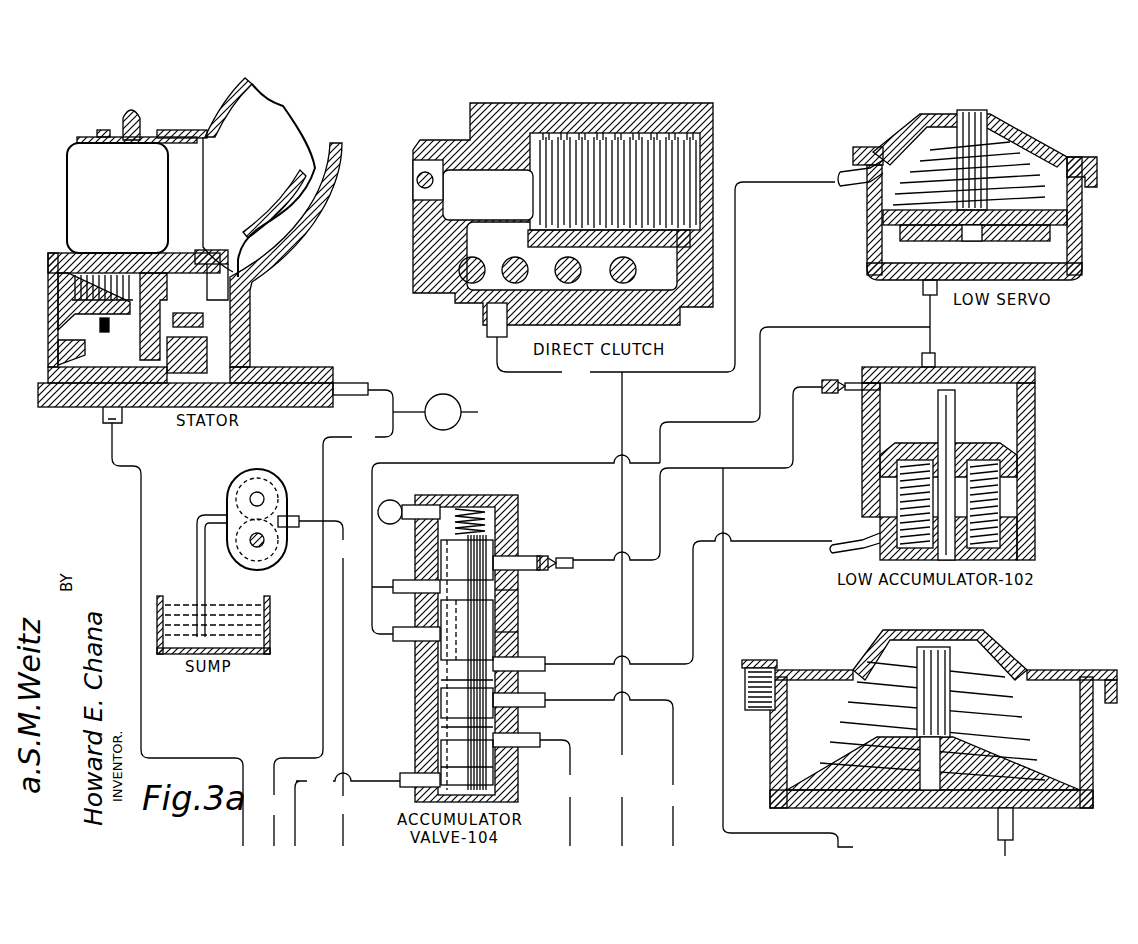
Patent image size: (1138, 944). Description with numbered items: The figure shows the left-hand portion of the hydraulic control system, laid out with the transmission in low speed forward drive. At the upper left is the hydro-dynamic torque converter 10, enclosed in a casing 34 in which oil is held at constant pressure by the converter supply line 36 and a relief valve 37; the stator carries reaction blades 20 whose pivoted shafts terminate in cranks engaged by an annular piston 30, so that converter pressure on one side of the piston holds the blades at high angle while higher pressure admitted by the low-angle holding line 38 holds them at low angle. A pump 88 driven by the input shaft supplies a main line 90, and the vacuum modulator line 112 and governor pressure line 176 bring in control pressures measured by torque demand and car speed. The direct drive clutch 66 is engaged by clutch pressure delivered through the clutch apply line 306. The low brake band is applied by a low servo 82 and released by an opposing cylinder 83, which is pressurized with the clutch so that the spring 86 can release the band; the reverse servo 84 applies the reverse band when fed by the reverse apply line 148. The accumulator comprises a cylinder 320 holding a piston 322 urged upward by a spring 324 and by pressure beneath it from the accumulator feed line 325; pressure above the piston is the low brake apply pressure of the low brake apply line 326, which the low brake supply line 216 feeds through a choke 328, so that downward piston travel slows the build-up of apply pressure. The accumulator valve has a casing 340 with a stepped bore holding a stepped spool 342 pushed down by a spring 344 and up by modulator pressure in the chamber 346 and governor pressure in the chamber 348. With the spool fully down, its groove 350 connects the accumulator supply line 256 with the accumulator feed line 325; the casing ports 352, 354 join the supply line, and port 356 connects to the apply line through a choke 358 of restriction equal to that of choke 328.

The hydro-dynamic torque converter 10 is at (292, 107).
The reaction blades 20 is at (70, 200).
The annular piston 30 is at (178, 266).
The casing 34 is at (314, 224).
The converter supply line 36 is at (394, 402).
The pressure regulator valve 37 is at (448, 412).
The low-angle holding line 38 is at (141, 511).
The direct drive clutch 66 is at (648, 165).
The low servo 82 is at (1052, 255).
The opposing cylinder 83 is at (1052, 183).
The reverse servo 84 is at (1035, 692).
The spring 86 is at (1015, 132).
The pump 88 is at (262, 470).
The main line 90 is at (344, 520).
The vacuum modulator line 112 is at (295, 818).
The reverse apply line 148 is at (1013, 822).
The governor pressure line 176 is at (570, 846).
The low brake supply line 216 is at (410, 588).
The accumulator supply line 256 is at (673, 840).
The clutch apply line 306 is at (622, 402).
The cylinder 320 is at (1000, 411).
The piston 322 is at (1005, 454).
The spring 324 is at (1000, 492).
The accumulator feed line 325 is at (752, 543).
The low brake apply line 326 is at (930, 339).
The choke 328 is at (840, 382).
The casing 340 is at (436, 548).
The stepped spool 342 is at (440, 720).
The spring 344 is at (470, 510).
The chamber 346 is at (425, 775).
The chamber 348 is at (496, 748).
The groove 350 is at (440, 683).
The port 352 is at (520, 629).
The port 354 is at (498, 590).
The port 356 is at (540, 557).
The choke 358 is at (548, 556).